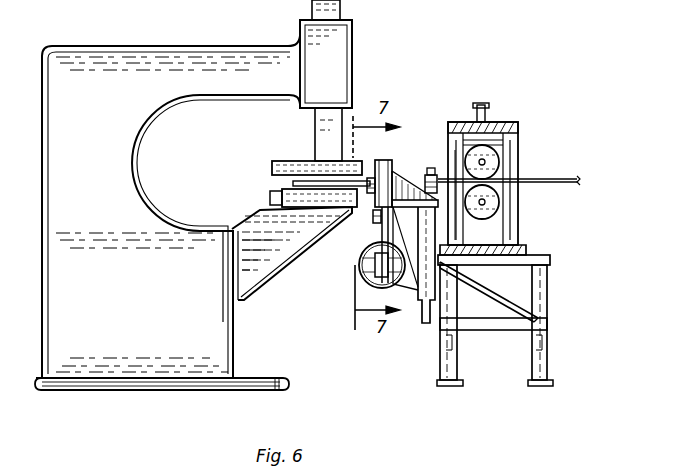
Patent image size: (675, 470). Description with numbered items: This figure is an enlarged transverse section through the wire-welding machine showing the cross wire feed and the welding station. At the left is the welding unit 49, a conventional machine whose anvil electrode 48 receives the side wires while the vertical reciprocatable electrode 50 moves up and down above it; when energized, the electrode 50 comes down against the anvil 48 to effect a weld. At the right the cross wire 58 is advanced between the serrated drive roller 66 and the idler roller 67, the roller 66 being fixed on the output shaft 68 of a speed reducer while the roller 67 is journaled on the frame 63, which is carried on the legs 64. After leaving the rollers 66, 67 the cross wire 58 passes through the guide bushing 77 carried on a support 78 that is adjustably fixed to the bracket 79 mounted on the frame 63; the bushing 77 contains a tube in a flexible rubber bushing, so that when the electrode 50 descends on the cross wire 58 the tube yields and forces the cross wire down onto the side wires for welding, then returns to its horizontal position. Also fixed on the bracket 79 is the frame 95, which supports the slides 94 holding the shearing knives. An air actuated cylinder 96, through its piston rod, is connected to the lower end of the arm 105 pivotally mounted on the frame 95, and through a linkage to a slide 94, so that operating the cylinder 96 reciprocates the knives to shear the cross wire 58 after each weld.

The welding unit 49 is at (134, 62).
The vertical reciprocatable electrode 50 is at (301, 168).
The anvil electrode 48 is at (270, 196).
The frame 95 is at (395, 140).
The slides 94 is at (372, 193).
The arm 105 is at (378, 223).
The air actuated cylinder 96 is at (364, 274).
The guide bushing 77 is at (431, 172).
The bracket 79 is at (426, 322).
The cross wire 58 is at (518, 179).
The serrated drive roller 66 is at (517, 208).
The idler roller 67 is at (492, 152).
The output shaft 68 is at (490, 203).
The support 78 is at (460, 202).
The frame 63 is at (513, 262).
The legs 64 is at (538, 366).